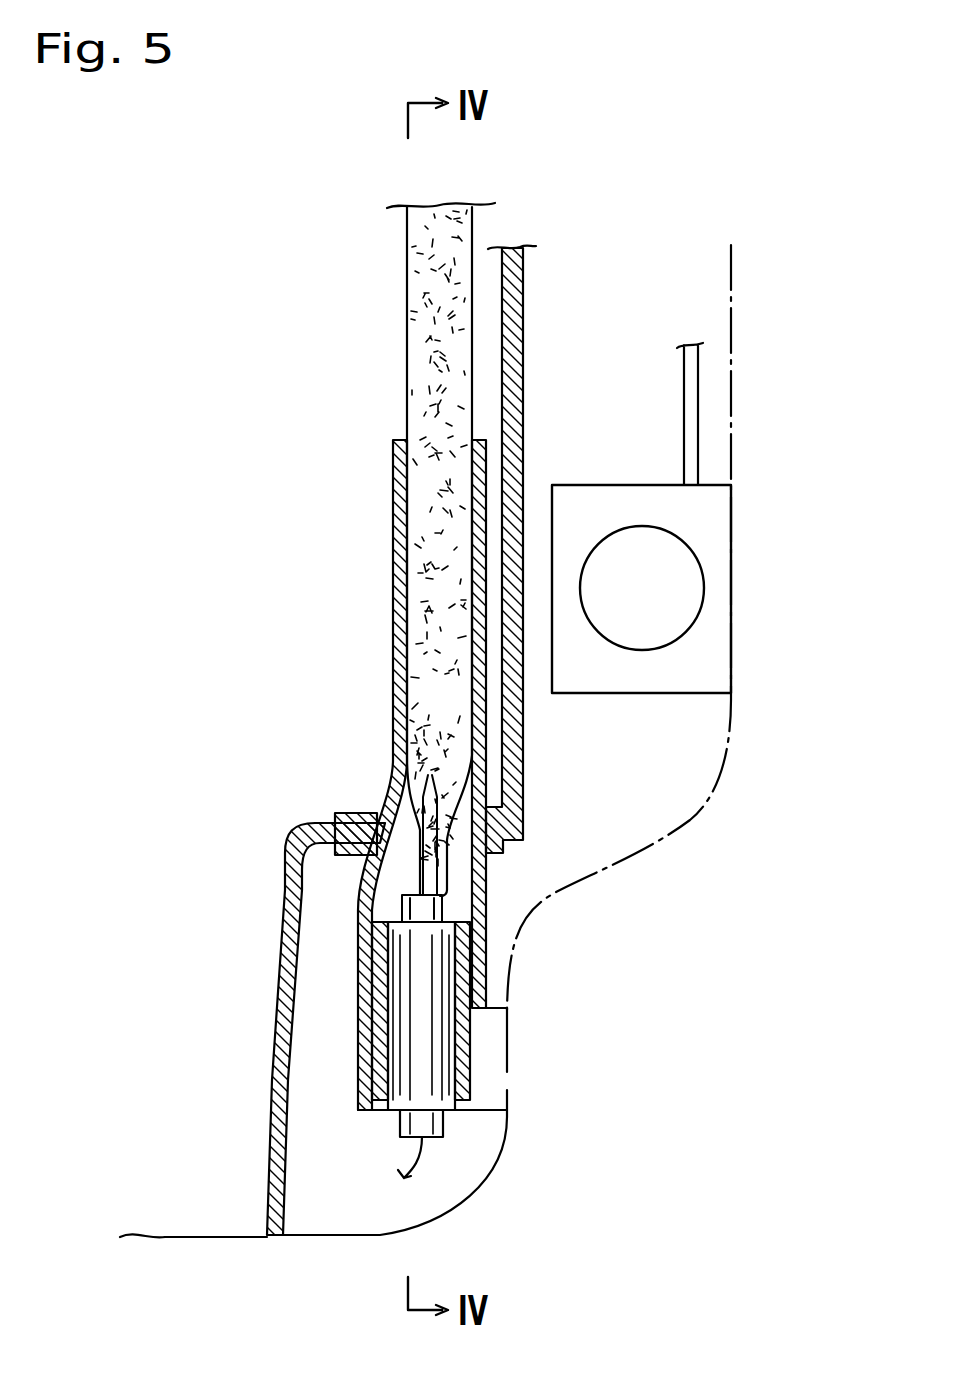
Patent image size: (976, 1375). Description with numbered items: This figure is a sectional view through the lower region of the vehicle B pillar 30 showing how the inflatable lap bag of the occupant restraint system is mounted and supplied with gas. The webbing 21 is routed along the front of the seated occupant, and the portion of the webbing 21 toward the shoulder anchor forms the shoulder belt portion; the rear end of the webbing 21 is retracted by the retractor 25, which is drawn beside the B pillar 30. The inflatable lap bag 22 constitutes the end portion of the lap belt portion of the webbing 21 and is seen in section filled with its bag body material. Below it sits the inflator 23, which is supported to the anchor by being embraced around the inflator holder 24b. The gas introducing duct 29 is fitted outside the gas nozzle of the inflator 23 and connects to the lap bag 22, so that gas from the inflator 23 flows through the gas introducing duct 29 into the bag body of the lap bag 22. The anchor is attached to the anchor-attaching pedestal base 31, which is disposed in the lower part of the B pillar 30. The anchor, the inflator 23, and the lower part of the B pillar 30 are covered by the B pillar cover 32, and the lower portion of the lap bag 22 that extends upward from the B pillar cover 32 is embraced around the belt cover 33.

The webbing 21 is at (683, 387).
The inflatable lap bag 22 is at (407, 288).
The inflator 23 is at (407, 1023).
The inflator holder 24b is at (473, 1058).
The retractor 25 is at (712, 663).
The gas introducing duct 29 is at (420, 870).
The B pillar 30 is at (731, 255).
The anchor-attaching pedestal base 31 is at (497, 1095).
The B pillar cover 32 is at (270, 1085).
The belt cover 33 is at (394, 610).